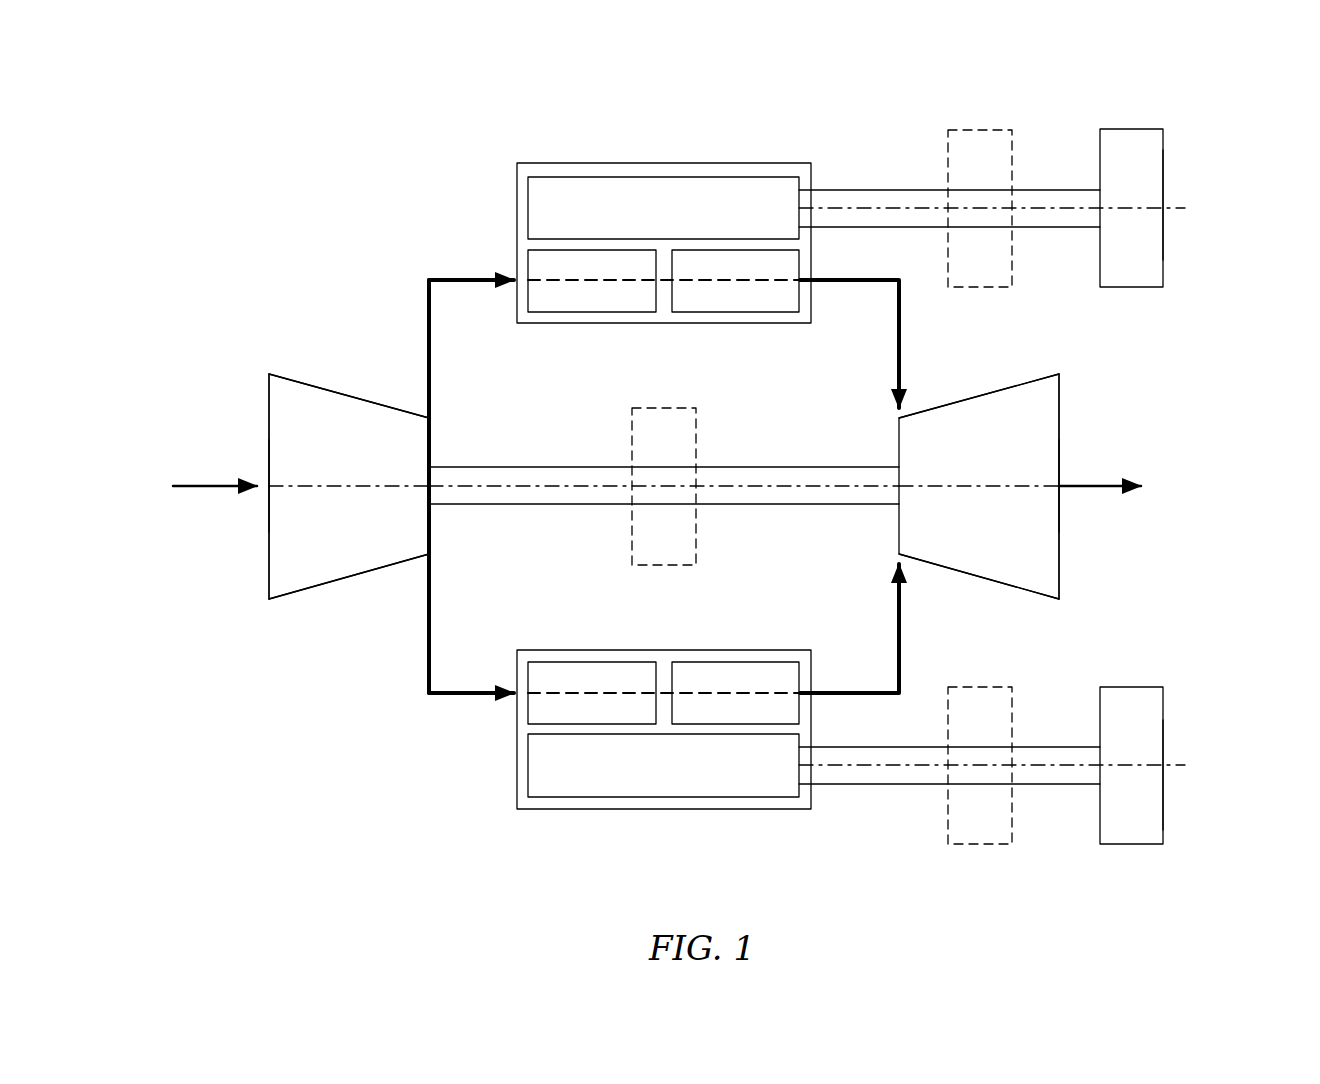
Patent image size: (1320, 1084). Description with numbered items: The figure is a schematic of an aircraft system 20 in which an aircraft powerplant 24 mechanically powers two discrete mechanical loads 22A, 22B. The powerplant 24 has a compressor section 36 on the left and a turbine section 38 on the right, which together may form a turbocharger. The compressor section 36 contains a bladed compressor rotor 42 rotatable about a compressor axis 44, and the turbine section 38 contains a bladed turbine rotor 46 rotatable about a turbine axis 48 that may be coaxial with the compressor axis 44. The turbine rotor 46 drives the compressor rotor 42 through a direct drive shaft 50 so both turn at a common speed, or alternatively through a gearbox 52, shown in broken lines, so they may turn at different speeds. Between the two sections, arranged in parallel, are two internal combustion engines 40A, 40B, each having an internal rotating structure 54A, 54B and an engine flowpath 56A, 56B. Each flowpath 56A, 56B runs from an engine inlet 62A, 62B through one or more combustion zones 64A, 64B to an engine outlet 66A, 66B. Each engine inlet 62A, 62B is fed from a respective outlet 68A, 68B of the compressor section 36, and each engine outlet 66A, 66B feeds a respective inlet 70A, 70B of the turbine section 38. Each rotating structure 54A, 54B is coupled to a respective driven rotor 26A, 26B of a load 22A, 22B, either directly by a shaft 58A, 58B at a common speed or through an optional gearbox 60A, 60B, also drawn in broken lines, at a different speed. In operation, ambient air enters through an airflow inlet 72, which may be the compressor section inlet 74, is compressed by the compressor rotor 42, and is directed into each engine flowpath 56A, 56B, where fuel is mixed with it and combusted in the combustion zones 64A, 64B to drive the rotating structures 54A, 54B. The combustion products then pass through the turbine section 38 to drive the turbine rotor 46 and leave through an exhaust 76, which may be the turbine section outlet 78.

The aircraft system 20 is at (222, 152).
The mechanical load 22A is at (1141, 129).
The mechanical load 22B is at (1141, 855).
The aircraft powerplant 24 is at (375, 162).
The driven rotor 26A is at (1163, 157).
The driven rotor 26B is at (1163, 818).
The compressor section 36 is at (309, 352).
The turbine section 38 is at (1012, 360).
The internal combustion engine 40A is at (642, 225).
The internal combustion engine 40B is at (643, 750).
The compressor rotor 42 is at (269, 554).
The compressor axis 44 is at (296, 486).
The turbine rotor 46 is at (1059, 554).
The turbine axis 48 is at (1035, 486).
The shaft 50 is at (762, 505).
The gearbox 52 is at (631, 530).
The rotating structure 54A is at (592, 176).
The rotating structure 54B is at (594, 797).
The engine flowpath 56A is at (558, 284).
The engine flowpath 56B is at (556, 690).
The shaft 58A is at (879, 189).
The shaft 58B is at (878, 797).
The gearbox 60A is at (996, 130).
The gearbox 60B is at (996, 844).
The engine inlet 62A is at (525, 275).
The engine inlet 62B is at (527, 696).
The combustion zone 64A is at (613, 313).
The combustion zone 64B is at (613, 662).
The engine outlet 66A is at (800, 284).
The engine outlet 66B is at (800, 693).
The compressor section outlet 68A is at (429, 418).
The compressor section outlet 68B is at (429, 554).
The turbine section inlet 70A is at (899, 418).
The turbine section inlet 70B is at (899, 554).
The airflow inlet 72 is at (183, 486).
The compressor section inlet 74 is at (269, 486).
The exhaust 76 is at (1127, 486).
The turbine section outlet 78 is at (1059, 486).